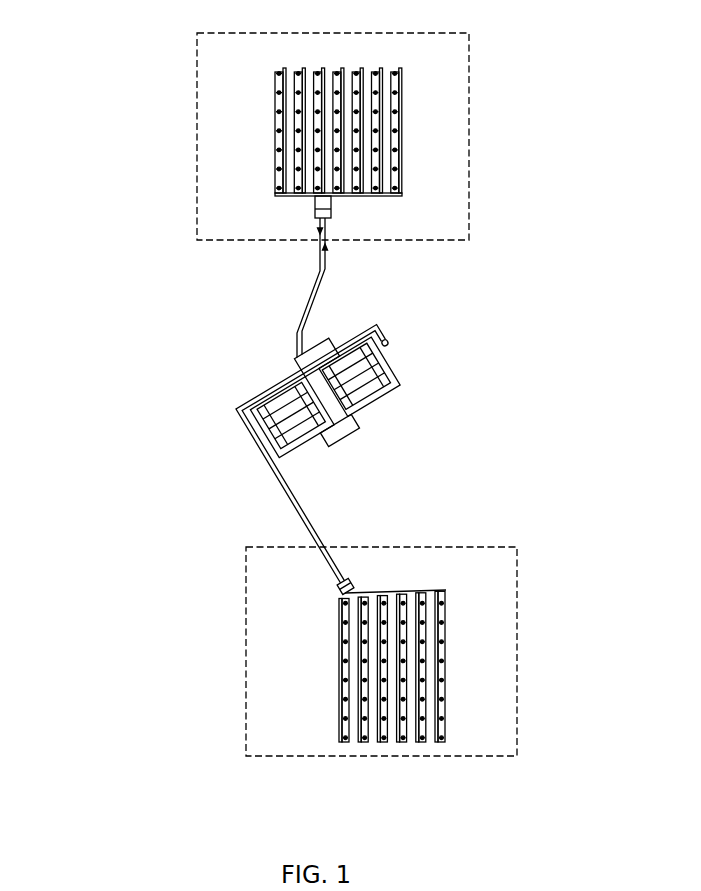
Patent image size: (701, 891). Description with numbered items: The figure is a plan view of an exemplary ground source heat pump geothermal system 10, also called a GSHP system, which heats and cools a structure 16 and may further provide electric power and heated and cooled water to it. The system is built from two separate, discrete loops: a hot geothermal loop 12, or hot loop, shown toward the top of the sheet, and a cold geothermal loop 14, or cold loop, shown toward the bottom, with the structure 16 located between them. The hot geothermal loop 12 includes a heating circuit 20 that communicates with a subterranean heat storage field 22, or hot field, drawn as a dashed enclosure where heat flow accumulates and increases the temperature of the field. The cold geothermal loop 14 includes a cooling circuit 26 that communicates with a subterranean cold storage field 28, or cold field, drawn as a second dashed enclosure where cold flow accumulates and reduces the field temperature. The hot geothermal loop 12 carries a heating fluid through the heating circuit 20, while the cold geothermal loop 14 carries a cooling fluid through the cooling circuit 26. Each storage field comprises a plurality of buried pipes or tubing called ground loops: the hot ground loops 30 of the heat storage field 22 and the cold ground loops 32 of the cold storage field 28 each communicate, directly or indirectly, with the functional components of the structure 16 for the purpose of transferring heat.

The ground source heat pump geothermal system 10 is at (86, 325).
The hot geothermal loop 12 is at (354, 288).
The cold geothermal loop 14 is at (368, 540).
The structure 16 is at (380, 403).
The heating circuit 20 is at (316, 280).
The subterranean heat storage field 22 is at (469, 148).
The cooling circuit 26 is at (272, 478).
The subterranean cold storage field 28 is at (517, 562).
The hot ground loops 30 is at (404, 83).
The cold ground loops 32 is at (430, 592).